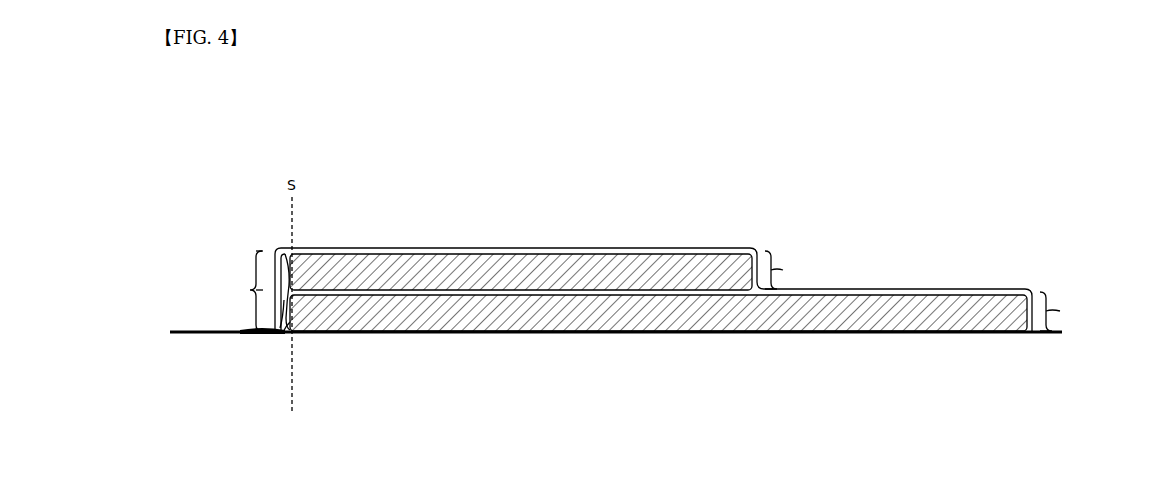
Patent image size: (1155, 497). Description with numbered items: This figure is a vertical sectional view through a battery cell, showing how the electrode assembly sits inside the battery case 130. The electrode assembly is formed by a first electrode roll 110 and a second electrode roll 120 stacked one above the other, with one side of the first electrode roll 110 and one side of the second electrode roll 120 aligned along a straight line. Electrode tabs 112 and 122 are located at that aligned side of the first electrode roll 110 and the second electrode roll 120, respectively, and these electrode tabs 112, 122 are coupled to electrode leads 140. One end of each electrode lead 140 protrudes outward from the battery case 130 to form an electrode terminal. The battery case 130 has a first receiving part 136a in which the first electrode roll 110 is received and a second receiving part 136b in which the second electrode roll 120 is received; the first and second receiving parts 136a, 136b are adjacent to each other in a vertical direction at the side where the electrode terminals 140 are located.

The first electrode roll 110 is at (885, 315).
The electrode tab 112 is at (290, 336).
The second electrode roll 120 is at (632, 268).
The electrode tab 122 is at (282, 249).
The battery case 130 is at (509, 248).
The first receiving part 136a is at (250, 309).
The second receiving part 136b is at (250, 270).
The electrode lead 140 is at (197, 336).